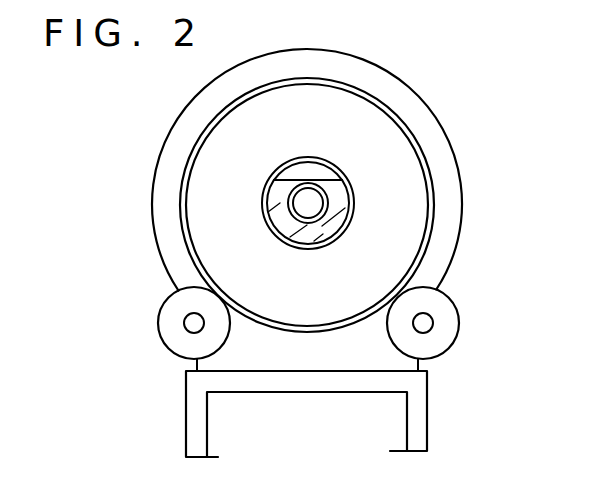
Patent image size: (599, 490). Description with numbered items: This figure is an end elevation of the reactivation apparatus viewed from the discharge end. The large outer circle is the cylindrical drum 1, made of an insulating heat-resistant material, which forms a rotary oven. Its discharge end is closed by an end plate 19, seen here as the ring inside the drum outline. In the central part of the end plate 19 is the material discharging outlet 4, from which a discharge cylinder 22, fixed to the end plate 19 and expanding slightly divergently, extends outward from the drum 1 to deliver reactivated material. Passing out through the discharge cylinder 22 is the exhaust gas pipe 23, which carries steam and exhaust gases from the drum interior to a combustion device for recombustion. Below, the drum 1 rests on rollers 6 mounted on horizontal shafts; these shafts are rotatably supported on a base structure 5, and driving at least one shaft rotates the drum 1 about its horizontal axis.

The cylindrical drum 1 is at (392, 133).
The end plate 19 is at (410, 212).
The discharge cylinder 22 is at (347, 225).
The exhaust gas pipe 23 is at (328, 207).
The material discharging outlet 4 is at (305, 178).
The rollers 6 is at (170, 322).
The base structure 5 is at (420, 410).